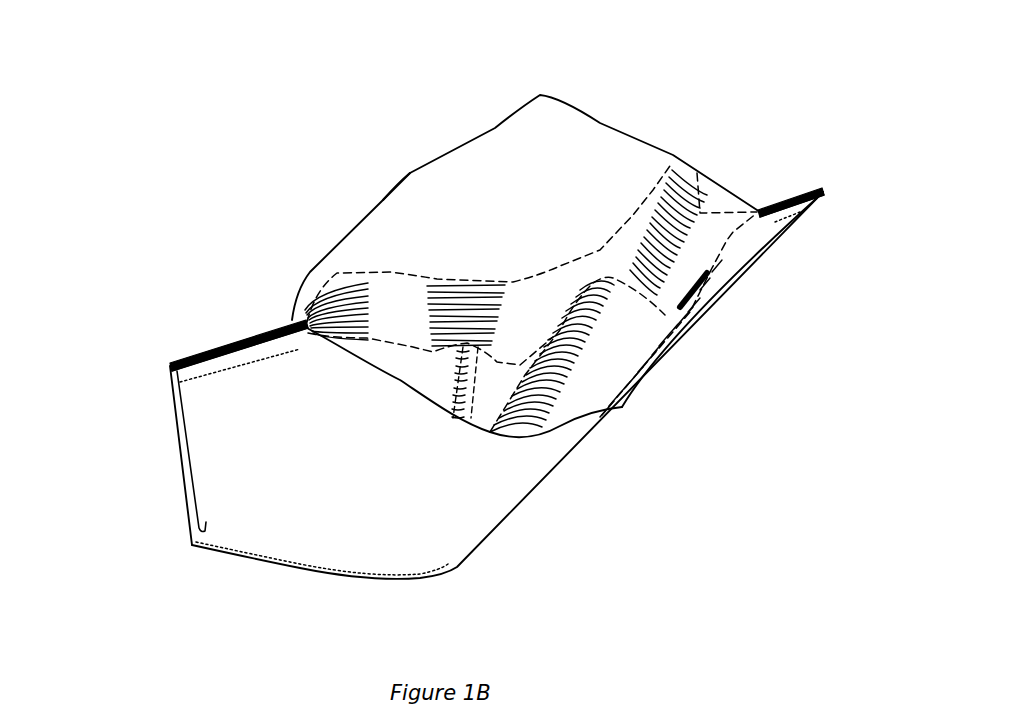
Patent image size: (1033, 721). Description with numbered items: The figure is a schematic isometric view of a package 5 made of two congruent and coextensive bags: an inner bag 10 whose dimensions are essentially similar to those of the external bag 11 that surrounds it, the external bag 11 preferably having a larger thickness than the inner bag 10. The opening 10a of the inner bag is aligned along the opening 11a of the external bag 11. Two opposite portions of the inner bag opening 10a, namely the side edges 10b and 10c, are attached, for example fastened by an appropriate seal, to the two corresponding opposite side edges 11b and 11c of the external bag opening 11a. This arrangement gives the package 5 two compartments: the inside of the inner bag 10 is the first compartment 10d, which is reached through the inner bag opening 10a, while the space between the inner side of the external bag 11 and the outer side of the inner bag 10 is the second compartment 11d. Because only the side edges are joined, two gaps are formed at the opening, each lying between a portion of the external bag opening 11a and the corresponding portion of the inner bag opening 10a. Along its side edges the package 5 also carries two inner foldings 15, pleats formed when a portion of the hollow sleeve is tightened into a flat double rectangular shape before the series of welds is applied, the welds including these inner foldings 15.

The package 5 is at (497, 305).
The inner bag 10 is at (511, 272).
The opening of the inner bag 10a is at (433, 280).
The side edge of the inner bag opening 10b is at (205, 350).
The side edge of the inner bag opening 10c is at (822, 198).
The first compartment 10d is at (693, 237).
The external bag 11 is at (478, 305).
The opening of the external bag 11a is at (493, 128).
The side edge of the external bag opening 11b is at (228, 343).
The side edge of the external bag opening 11c is at (822, 192).
The second compartment 11d is at (559, 187).
The inner foldings 15 is at (168, 529).